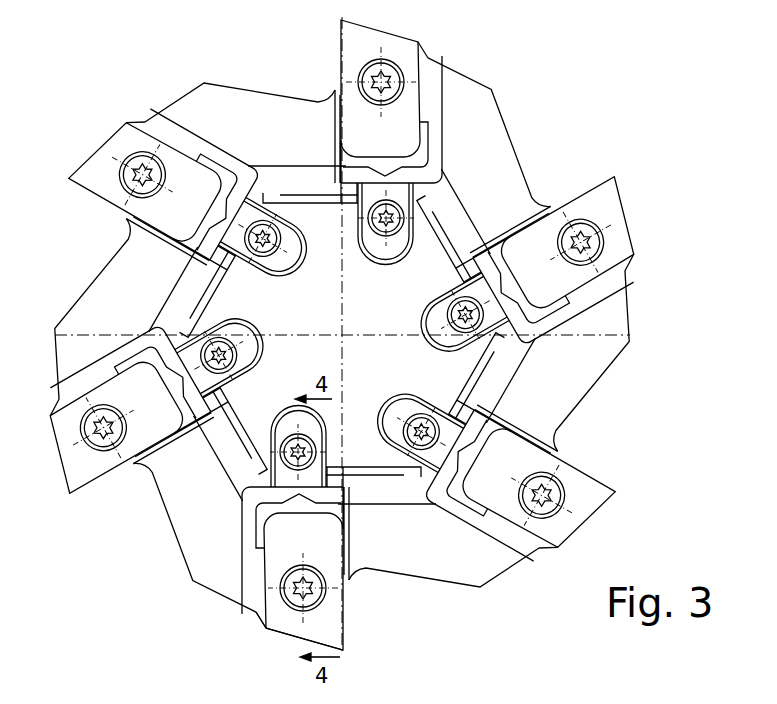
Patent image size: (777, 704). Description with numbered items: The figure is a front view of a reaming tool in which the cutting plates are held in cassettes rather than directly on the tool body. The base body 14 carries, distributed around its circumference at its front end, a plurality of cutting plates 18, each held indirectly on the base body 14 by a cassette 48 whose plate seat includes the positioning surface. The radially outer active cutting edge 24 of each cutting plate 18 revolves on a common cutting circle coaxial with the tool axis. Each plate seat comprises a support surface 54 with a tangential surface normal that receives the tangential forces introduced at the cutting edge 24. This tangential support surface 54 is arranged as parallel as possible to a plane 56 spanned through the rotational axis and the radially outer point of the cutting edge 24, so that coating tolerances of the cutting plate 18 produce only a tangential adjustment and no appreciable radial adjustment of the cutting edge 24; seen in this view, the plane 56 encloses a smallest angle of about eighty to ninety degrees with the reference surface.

The base body 14 is at (605, 373).
The cutting plate 18 is at (610, 197).
The cutting edge 24 is at (342, 650).
The cassette 48 is at (617, 277).
The support surface 54 is at (263, 627).
The plane 56 is at (343, 351).